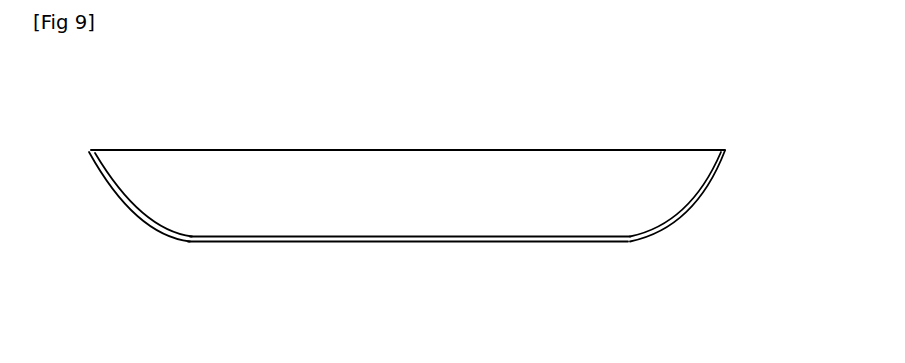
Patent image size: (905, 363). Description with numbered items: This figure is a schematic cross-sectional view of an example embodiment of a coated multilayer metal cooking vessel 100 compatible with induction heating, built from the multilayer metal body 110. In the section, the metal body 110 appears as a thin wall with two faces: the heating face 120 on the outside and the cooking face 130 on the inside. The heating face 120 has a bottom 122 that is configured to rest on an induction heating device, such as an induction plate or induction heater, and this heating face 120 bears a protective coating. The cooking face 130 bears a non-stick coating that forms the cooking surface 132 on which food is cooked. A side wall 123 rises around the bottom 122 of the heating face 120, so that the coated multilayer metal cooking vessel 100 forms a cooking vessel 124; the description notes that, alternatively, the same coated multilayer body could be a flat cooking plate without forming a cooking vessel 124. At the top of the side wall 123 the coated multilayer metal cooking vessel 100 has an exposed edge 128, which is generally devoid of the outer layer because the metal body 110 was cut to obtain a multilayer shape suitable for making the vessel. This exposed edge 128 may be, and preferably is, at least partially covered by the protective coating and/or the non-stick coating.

The coated multilayer metal cooking vessel 100 is at (229, 254).
The metal body 110 is at (598, 243).
The heating face 120 is at (312, 237).
The bottom 122 is at (338, 237).
The side wall 123 is at (705, 193).
The cooking vessel 124 is at (607, 162).
The exposed edge 128 is at (727, 148).
The cooking face 130 is at (312, 237).
The cooking surface 132 is at (338, 237).